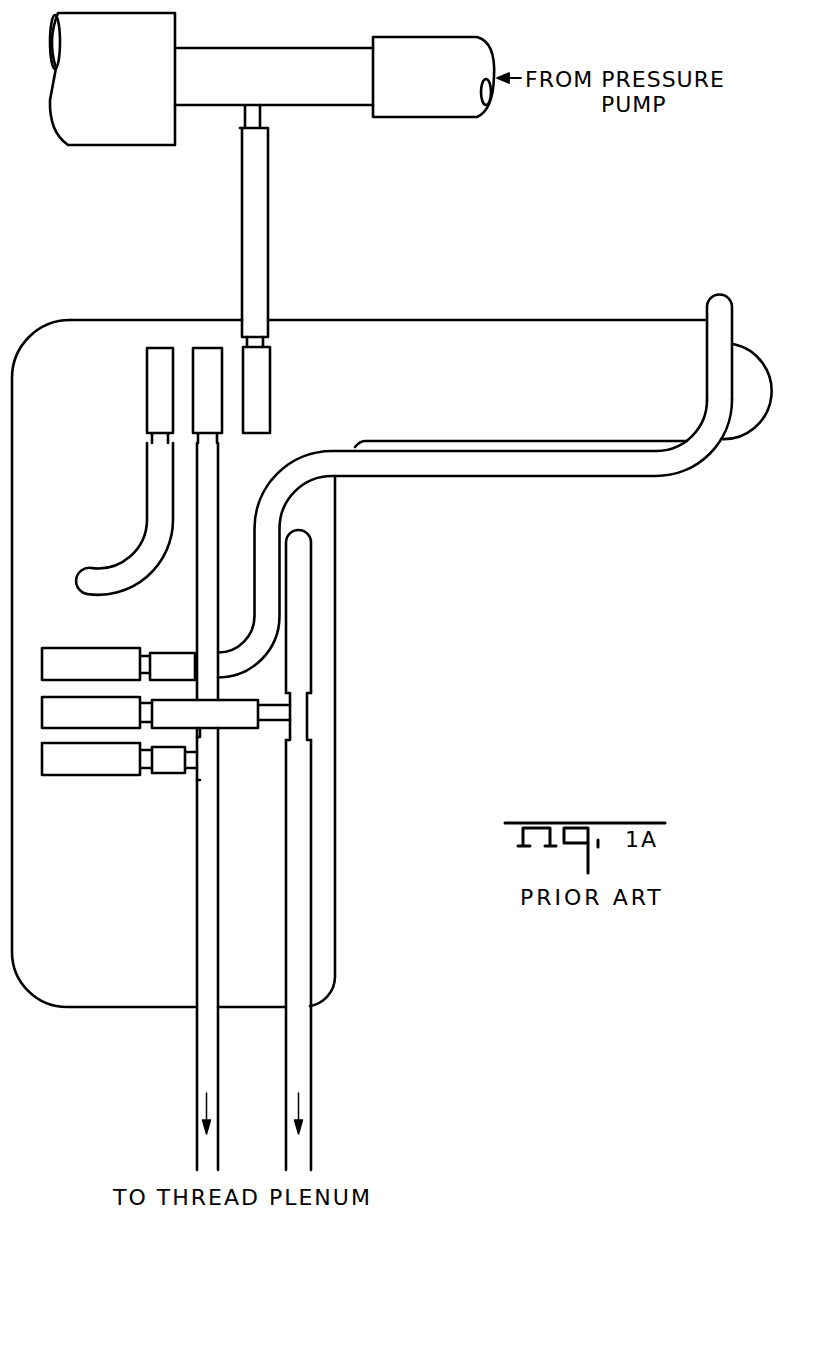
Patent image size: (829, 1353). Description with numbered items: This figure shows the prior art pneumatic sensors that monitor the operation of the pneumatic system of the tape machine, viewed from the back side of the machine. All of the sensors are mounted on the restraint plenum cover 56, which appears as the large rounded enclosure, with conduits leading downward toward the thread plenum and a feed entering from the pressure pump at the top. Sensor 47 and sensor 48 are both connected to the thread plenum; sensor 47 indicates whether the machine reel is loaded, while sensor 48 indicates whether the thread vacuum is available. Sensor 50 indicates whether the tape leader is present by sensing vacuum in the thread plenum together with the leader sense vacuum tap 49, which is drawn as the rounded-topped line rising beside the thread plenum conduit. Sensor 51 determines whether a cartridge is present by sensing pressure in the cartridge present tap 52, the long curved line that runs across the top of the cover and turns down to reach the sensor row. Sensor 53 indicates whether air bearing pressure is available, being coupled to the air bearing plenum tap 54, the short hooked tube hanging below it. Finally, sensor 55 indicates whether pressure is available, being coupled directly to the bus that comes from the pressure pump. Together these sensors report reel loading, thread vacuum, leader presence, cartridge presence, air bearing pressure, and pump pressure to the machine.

The sensor 47 is at (98, 762).
The sensor 48 is at (217, 419).
The leader sense vacuum tap 49 is at (306, 546).
The sensor 50 is at (48, 715).
The sensor 51 is at (56, 658).
The cartridge present tap 52 is at (719, 297).
The sensor 53 is at (156, 373).
The air bearing plenum tap 54 is at (86, 575).
The sensor 55 is at (261, 383).
The restraint plenum cover 56 is at (552, 330).